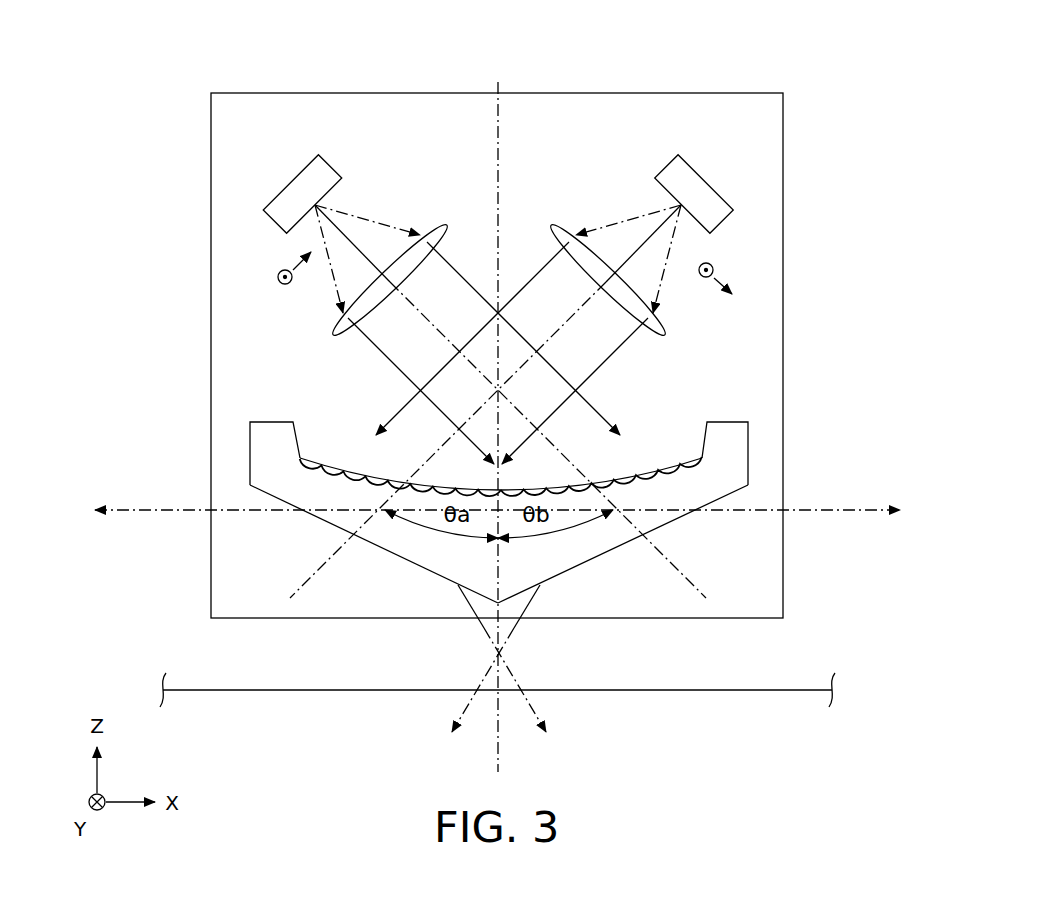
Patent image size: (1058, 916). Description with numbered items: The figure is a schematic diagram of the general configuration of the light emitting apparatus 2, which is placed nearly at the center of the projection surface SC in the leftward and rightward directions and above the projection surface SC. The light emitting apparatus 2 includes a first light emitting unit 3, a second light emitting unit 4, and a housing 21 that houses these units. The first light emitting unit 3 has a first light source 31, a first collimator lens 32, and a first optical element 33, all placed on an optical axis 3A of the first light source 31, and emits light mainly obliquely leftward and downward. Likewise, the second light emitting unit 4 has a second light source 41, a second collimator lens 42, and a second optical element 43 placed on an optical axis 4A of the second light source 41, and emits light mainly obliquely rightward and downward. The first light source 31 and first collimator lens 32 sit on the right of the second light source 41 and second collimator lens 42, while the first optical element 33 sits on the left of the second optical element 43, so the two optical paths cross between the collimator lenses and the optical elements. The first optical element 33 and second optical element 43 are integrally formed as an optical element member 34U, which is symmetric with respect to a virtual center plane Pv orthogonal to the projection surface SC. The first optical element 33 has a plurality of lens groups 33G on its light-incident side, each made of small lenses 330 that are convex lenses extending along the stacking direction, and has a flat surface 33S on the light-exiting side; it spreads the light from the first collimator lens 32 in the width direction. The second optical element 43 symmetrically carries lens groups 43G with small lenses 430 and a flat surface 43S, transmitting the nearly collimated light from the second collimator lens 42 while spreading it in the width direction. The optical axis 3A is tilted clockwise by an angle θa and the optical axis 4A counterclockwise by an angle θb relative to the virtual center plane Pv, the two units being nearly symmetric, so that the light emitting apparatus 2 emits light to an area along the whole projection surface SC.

The light emitting apparatus 2 is at (910, 126).
The housing 21 is at (784, 187).
The first light emitting unit 3 is at (716, 328).
The first light source 31 is at (699, 188).
The first collimator lens 32 is at (559, 229).
The optical axis 3A is at (638, 248).
The second light emitting unit 4 is at (294, 307).
The second light source 41 is at (303, 190).
The second collimator lens 42 is at (441, 229).
The optical axis 4A is at (363, 248).
The first optical element 33 is at (380, 533).
The second optical element 43 is at (623, 533).
The lens groups 33G is at (400, 442).
The lens groups 43G is at (601, 442).
The small lenses 330 is at (376, 468).
The small lenses 430 is at (620, 468).
The flat surface 33S is at (312, 522).
The flat surface 43S is at (687, 513).
The optical element member 34U is at (762, 450).
The projection surface SC is at (800, 688).
The virtual center plane Pv is at (502, 750).